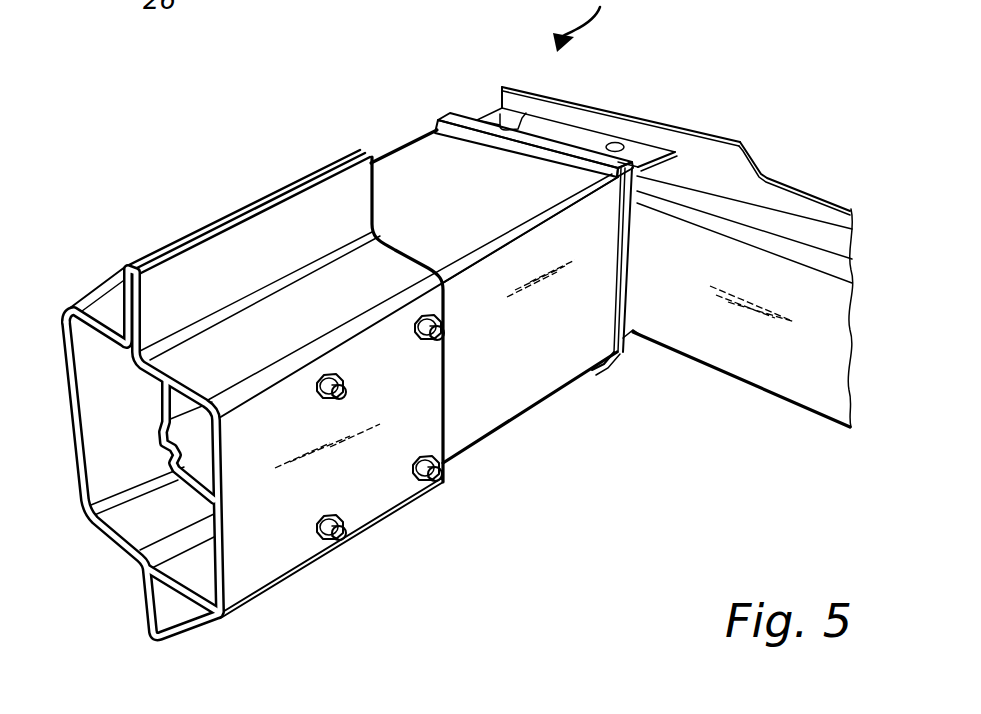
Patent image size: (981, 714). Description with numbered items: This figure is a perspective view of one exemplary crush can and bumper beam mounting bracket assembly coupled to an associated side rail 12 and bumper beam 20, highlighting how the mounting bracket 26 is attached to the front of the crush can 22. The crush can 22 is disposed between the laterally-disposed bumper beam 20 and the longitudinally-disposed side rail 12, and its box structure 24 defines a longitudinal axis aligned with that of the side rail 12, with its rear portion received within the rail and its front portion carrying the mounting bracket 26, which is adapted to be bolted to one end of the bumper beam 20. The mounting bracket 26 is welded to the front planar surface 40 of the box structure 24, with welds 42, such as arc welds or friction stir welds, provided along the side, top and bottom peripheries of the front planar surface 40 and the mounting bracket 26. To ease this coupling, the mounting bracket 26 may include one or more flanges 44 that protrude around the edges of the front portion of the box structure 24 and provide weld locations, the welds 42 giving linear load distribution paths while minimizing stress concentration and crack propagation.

The side rail 12 is at (280, 580).
The bumper beam 20 is at (792, 187).
The crush can 22 is at (393, 115).
The box structure 24 is at (463, 455).
The mounting bracket 26 is at (587, 128).
The front planar surface 40 is at (570, 308).
The welds 42 is at (641, 322).
The flanges 44 is at (463, 122).